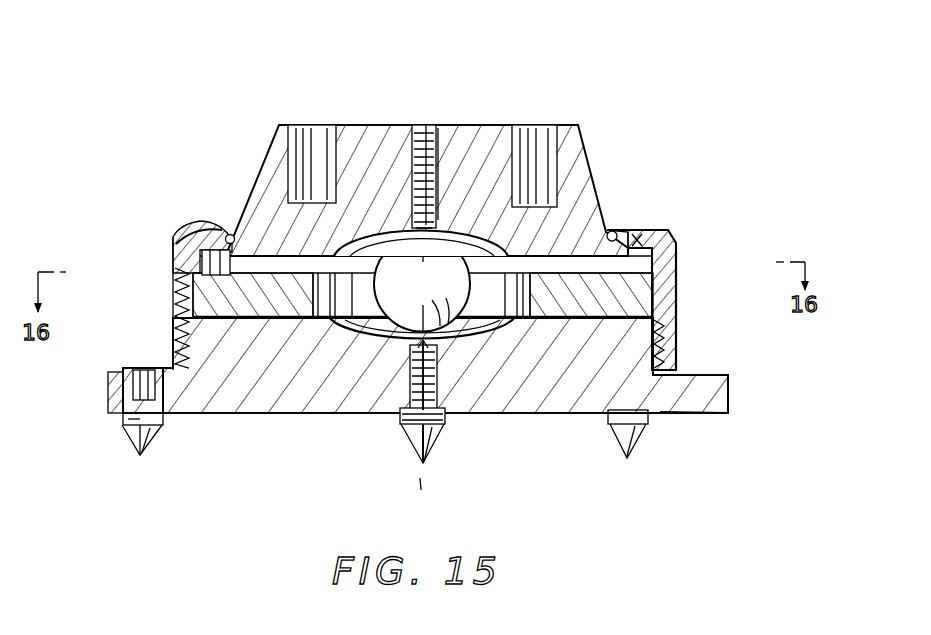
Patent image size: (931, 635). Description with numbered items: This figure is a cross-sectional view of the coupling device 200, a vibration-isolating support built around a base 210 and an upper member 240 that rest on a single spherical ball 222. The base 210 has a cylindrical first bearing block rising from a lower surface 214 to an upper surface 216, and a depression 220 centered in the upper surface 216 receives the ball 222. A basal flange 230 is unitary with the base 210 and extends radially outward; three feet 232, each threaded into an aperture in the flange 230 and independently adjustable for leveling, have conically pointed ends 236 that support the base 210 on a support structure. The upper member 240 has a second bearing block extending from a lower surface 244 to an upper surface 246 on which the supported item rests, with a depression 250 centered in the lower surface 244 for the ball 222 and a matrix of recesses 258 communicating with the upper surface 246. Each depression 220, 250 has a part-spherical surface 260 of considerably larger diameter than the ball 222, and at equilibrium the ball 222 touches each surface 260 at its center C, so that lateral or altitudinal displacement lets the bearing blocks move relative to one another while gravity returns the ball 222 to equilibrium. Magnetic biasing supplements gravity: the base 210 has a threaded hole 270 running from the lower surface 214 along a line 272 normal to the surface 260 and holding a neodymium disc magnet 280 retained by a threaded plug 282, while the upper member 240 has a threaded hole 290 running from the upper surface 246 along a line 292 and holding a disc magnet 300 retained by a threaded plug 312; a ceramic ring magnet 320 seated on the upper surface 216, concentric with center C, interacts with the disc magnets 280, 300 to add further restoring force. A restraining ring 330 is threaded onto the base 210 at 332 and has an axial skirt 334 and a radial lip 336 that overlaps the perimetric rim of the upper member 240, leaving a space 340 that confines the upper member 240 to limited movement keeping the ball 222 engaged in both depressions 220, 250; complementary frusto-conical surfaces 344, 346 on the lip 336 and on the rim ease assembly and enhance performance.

The coupling device 200 is at (108, 372).
The base 210 is at (732, 378).
The lower surface 214 is at (575, 414).
The upper surface 216 is at (240, 306).
The depression 220 is at (340, 322).
The spherical ball 222 is at (452, 282).
The basal flange 230 is at (700, 414).
The foot 232 is at (122, 428).
The conically pointed end 236 is at (142, 452).
The upper member 240 is at (582, 190).
The lower surface 244 is at (204, 250).
The upper surface 246 is at (513, 128).
The depression 250 is at (370, 255).
The recess 258 is at (306, 125).
The part-spherical surface 260 is at (421, 295).
The threaded hole 270 is at (438, 412).
The line 272 is at (400, 438).
The disc magnet 280 is at (377, 332).
The threaded plug 282 is at (410, 368).
The threaded hole 290 is at (428, 215).
The line 292 is at (430, 125).
The disc magnet 300 is at (466, 245).
The threaded plug 312 is at (445, 225).
The ring magnet 320 is at (200, 276).
The restraining ring 330 is at (680, 239).
The threaded connection 332 is at (670, 334).
The axial skirt 334 is at (678, 298).
The radial lip 336 is at (616, 232).
The space 340 is at (233, 233).
The frusto-conical surface 344 is at (202, 223).
The frusto-conical surface 346 is at (240, 230).